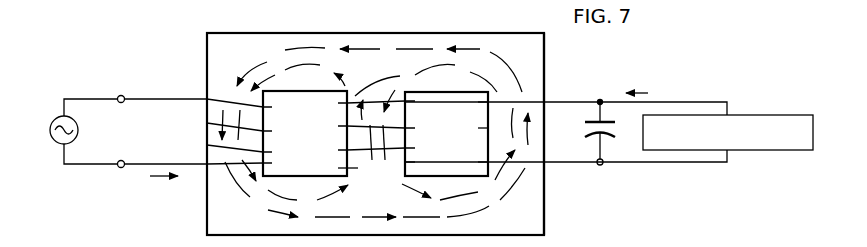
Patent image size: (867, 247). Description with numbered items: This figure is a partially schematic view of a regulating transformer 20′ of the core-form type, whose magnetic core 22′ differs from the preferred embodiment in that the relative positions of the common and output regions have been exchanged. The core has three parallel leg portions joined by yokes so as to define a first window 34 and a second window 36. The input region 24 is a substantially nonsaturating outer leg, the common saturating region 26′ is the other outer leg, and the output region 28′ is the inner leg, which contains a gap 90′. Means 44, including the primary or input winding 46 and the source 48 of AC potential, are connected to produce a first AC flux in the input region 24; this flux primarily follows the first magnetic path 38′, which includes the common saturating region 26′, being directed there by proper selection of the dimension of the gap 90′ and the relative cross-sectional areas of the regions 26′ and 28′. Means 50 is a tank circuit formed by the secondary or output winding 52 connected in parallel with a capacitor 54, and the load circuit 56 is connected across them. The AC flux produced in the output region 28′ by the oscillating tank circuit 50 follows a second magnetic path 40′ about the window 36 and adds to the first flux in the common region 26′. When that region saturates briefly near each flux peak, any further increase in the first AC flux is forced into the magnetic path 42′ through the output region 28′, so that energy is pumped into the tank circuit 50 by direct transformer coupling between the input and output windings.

The regulating transformer 20′ is at (508, 26).
The magnetic core 22′ is at (587, 226).
The common saturating region 26′ is at (546, 92).
The input region 24 is at (252, 136).
The output region 28′ is at (407, 148).
The first window 34 is at (317, 91).
The second window 36 is at (460, 91).
The first magnetic path 38′ is at (266, 210).
The second magnetic path 40′ is at (409, 184).
The magnetic path 42′ is at (352, 88).
The means for providing first AC flux 44 is at (136, 138).
The primary or input winding 46 is at (207, 123).
The source of AC potential 48 is at (57, 118).
The means for providing second AC flux 50 is at (576, 143).
The secondary or output winding 52 is at (344, 129).
The capacitor 54 is at (610, 135).
The load circuit 56 is at (766, 115).
The gap 90′ is at (352, 158).